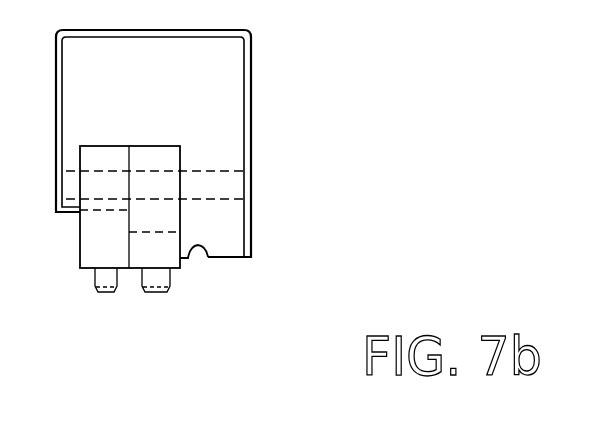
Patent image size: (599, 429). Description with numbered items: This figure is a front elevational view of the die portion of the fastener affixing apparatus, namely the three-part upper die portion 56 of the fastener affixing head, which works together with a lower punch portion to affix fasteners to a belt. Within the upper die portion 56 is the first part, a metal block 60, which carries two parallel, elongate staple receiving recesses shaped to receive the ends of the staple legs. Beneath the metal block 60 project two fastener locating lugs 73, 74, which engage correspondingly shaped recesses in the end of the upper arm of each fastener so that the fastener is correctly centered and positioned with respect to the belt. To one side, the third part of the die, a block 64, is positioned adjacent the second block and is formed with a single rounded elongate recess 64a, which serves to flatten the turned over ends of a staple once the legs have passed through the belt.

The upper die portion 56 is at (257, 133).
The metal block 60 is at (93, 248).
The fastener locating lug 73 is at (102, 280).
The fastener locating lug 74 is at (143, 277).
The rounded elongate recess 64a is at (201, 249).
The block 64 is at (230, 245).